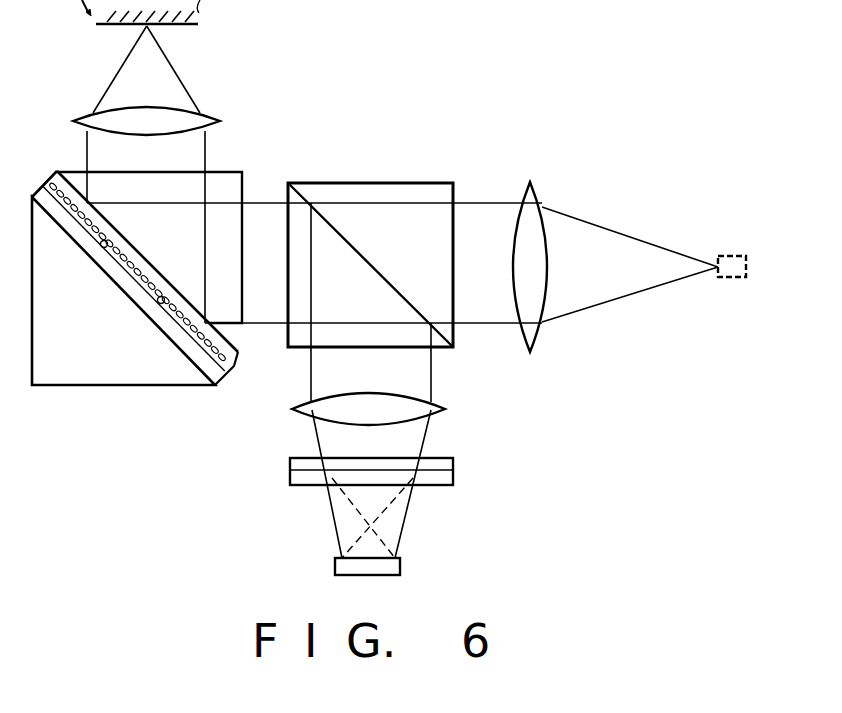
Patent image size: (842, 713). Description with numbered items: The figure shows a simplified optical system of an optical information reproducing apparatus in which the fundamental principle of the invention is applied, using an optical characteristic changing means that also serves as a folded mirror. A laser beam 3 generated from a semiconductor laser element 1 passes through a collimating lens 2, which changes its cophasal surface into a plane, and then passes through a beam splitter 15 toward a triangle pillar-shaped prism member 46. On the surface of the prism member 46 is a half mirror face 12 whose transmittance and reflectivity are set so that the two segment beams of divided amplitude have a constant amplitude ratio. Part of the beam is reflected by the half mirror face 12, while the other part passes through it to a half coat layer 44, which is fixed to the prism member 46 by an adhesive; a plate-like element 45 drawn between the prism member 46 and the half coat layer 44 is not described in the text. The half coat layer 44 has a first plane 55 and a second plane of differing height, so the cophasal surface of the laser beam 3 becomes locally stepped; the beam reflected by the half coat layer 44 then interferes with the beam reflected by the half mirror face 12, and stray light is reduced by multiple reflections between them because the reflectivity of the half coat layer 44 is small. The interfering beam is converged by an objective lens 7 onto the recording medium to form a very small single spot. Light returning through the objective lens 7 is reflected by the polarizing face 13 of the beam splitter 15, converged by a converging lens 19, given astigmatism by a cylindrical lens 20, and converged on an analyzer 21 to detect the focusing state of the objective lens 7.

The semiconductor laser element 1 is at (730, 255).
The collimating lens 2 is at (532, 198).
The laser beam 3 is at (597, 293).
The objective lens 7 is at (218, 120).
The half mirror face 12 is at (128, 238).
The polarizing face 13 is at (381, 272).
The beam splitter 15 is at (359, 190).
The converging lens 19 is at (440, 408).
The cylindrical lens 20 is at (453, 460).
The analyzer 21 is at (401, 566).
The half coat layer 44 is at (236, 368).
The transparent plate 45 is at (220, 372).
The triangle pillar-shaped prism member 46 is at (101, 374).
The first plane 55 is at (242, 354).